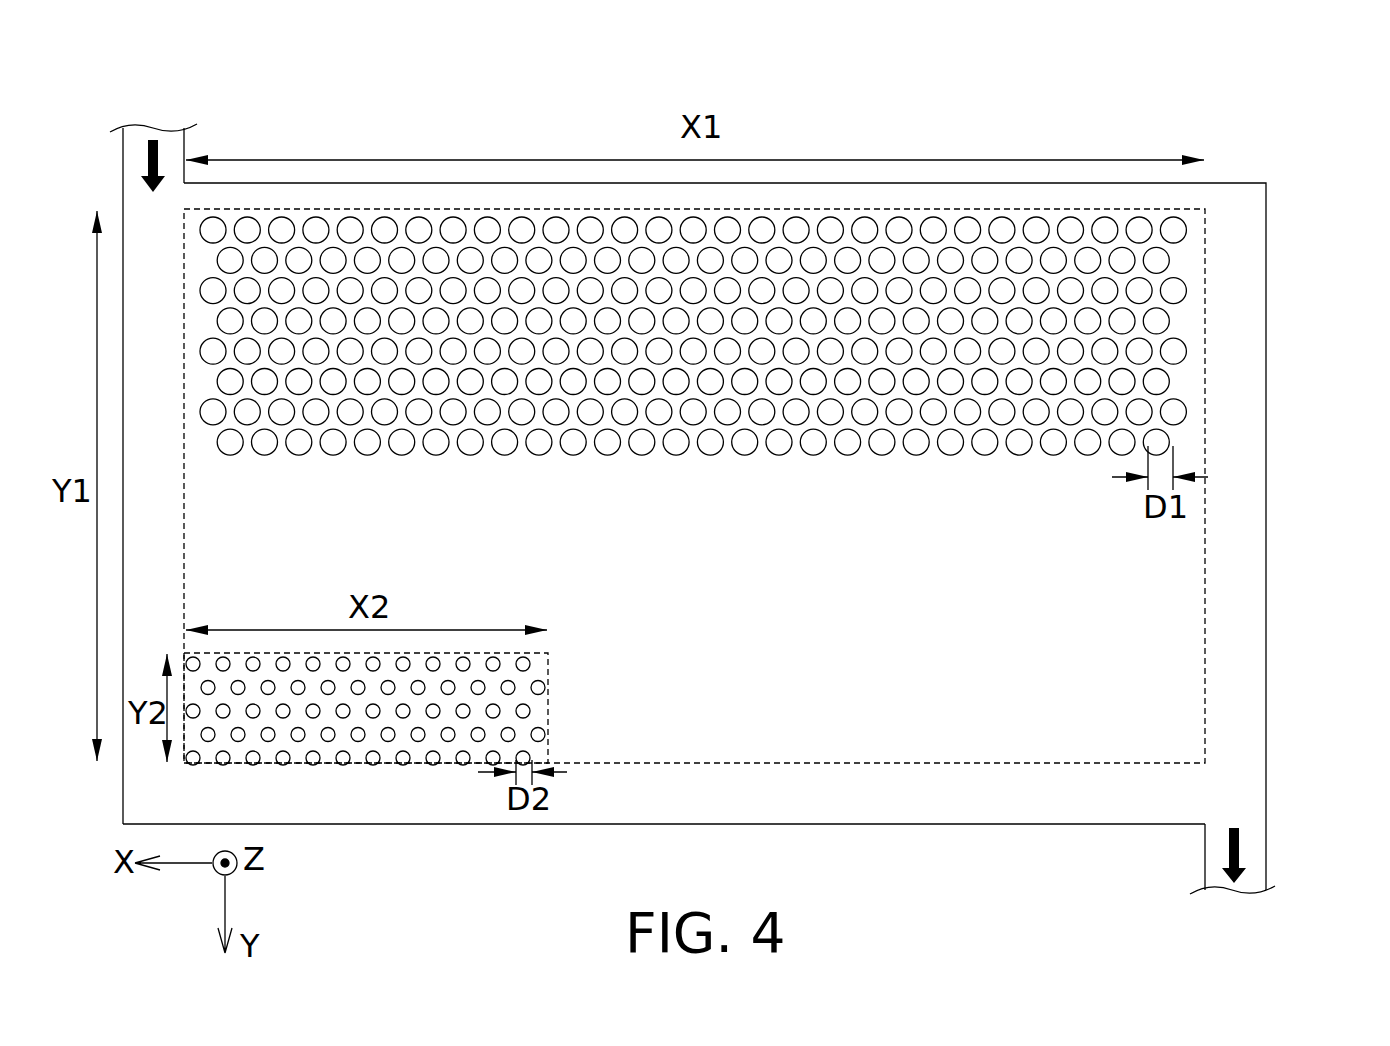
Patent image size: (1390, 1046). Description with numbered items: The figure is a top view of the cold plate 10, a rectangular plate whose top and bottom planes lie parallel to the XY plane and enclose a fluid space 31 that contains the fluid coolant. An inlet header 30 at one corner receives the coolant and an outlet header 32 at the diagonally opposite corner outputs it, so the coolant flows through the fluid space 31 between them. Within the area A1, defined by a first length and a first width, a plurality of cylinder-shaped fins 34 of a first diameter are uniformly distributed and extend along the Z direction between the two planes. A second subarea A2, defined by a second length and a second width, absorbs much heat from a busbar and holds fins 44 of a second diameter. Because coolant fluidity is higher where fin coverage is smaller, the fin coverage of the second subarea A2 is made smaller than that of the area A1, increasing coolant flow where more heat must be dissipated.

The cold plate 10 is at (725, 465).
The inlet header 30 is at (140, 155).
The fluid space 31 is at (1228, 672).
The outlet header 32 is at (1240, 848).
The fins 34 is at (1170, 261).
The fins 44 is at (547, 686).
The area A1 is at (1205, 382).
The second subarea A2 is at (548, 707).